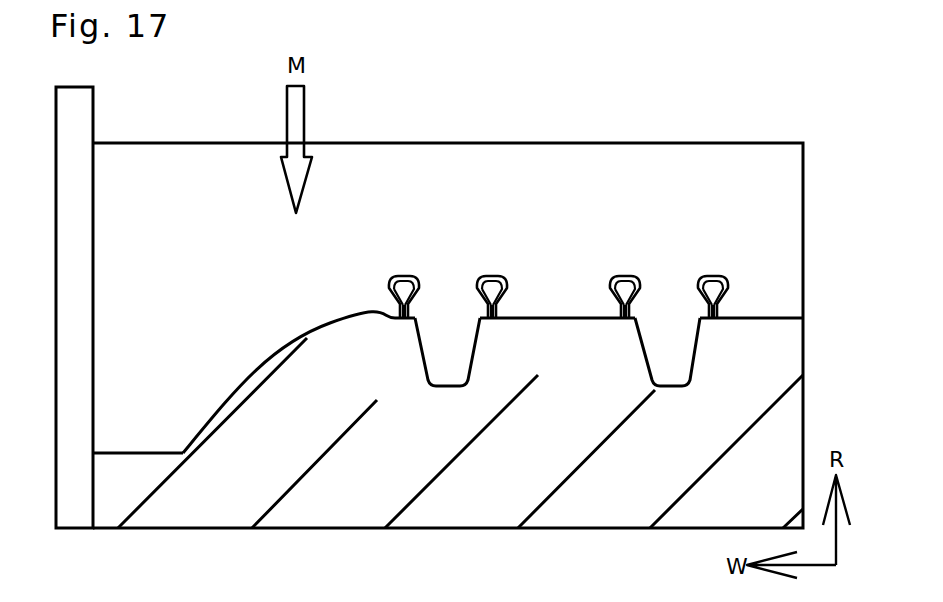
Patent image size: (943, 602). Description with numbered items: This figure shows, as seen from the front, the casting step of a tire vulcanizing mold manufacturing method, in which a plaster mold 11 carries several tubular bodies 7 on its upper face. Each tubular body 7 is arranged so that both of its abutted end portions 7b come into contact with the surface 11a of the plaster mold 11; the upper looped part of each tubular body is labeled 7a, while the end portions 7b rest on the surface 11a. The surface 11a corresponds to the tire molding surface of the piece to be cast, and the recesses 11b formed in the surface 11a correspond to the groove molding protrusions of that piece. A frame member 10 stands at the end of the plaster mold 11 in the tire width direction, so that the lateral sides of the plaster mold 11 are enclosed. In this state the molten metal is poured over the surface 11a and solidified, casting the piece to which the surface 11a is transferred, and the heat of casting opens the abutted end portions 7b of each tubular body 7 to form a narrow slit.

The tubular body 7 is at (393, 254).
The head portion of clip 7a is at (390, 286).
The abutted end portions 7b is at (403, 322).
The frame member 10 is at (100, 275).
The plaster mold 11 is at (135, 423).
The surface 11a is at (283, 345).
The recesses 11b is at (441, 384).